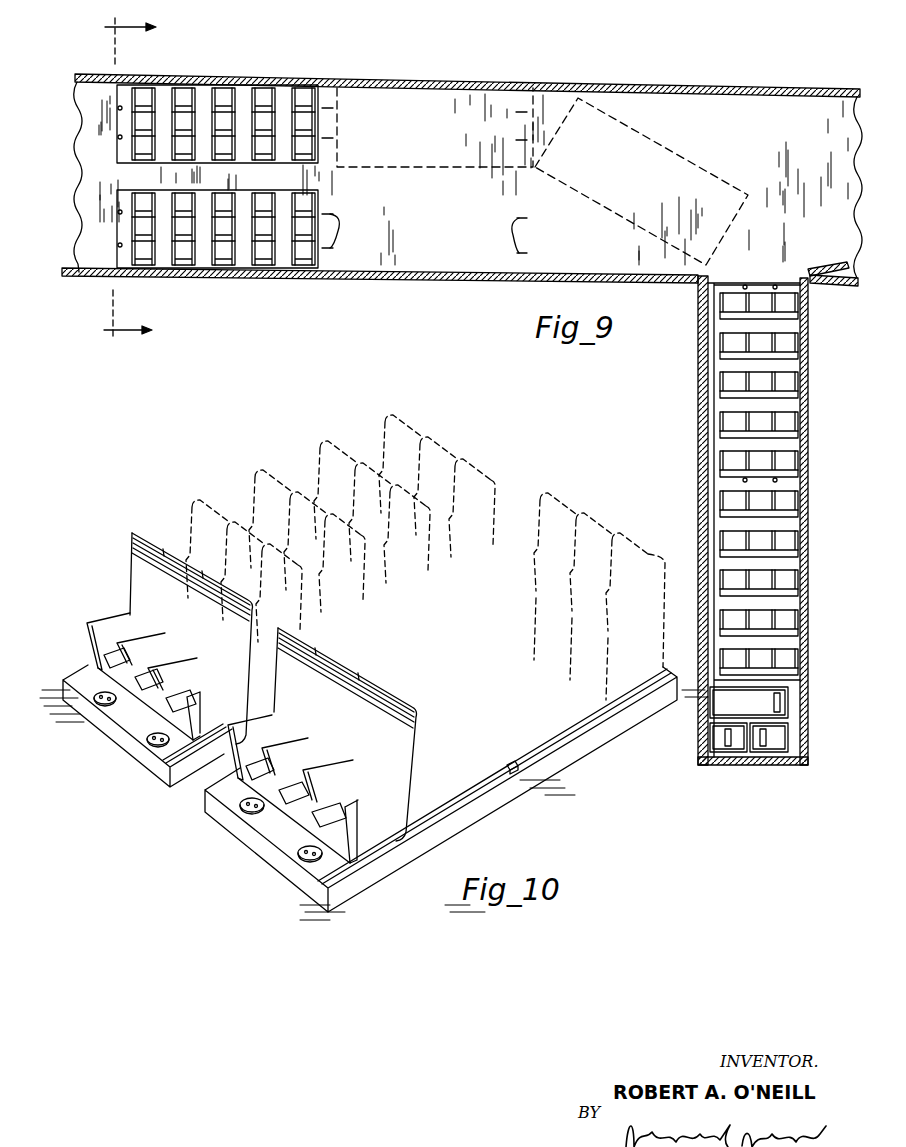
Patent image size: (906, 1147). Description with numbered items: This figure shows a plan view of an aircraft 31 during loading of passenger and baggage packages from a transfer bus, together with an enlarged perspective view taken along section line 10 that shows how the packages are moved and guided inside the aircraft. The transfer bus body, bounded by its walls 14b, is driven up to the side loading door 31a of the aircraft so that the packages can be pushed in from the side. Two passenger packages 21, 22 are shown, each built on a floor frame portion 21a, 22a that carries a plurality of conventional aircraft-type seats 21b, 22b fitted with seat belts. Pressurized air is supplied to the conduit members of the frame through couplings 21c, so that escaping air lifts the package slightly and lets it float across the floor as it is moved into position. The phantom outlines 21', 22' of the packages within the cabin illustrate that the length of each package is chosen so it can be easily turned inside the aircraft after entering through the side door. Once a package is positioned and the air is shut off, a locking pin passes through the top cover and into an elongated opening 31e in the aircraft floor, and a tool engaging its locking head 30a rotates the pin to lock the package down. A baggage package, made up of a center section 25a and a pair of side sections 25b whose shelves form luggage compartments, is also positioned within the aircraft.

In FIG. 9, the section line 10 is at (120, 183).
In FIG. 9, the walls 14b is at (808, 541).
In FIG. 9, the passenger package 21 is at (729, 430).
In FIG. 9, the passenger package phantom outline 21' is at (435, 141).
In FIG. 10, the floor frame portion 21a is at (338, 871).
In FIG. 10, the seats 21b is at (410, 749).
In FIG. 10, the couplings 21c is at (520, 773).
In FIG. 9, the passenger package 22 is at (782, 623).
In FIG. 9, the passenger package phantom outline 22' is at (641, 181).
In FIG. 10, the floor frame portion 22a is at (86, 677).
In FIG. 10, the seats 22b is at (140, 578).
In FIG. 9, the center section 25a is at (783, 707).
In FIG. 9, the side sections 25b is at (785, 751).
In FIG. 10, the locking head 30a is at (160, 731).
In FIG. 9, the aircraft 31 is at (338, 284).
In FIG. 9, the side loading door 31a is at (836, 262).
In FIG. 9, the elongated opening 31e is at (424, 180).